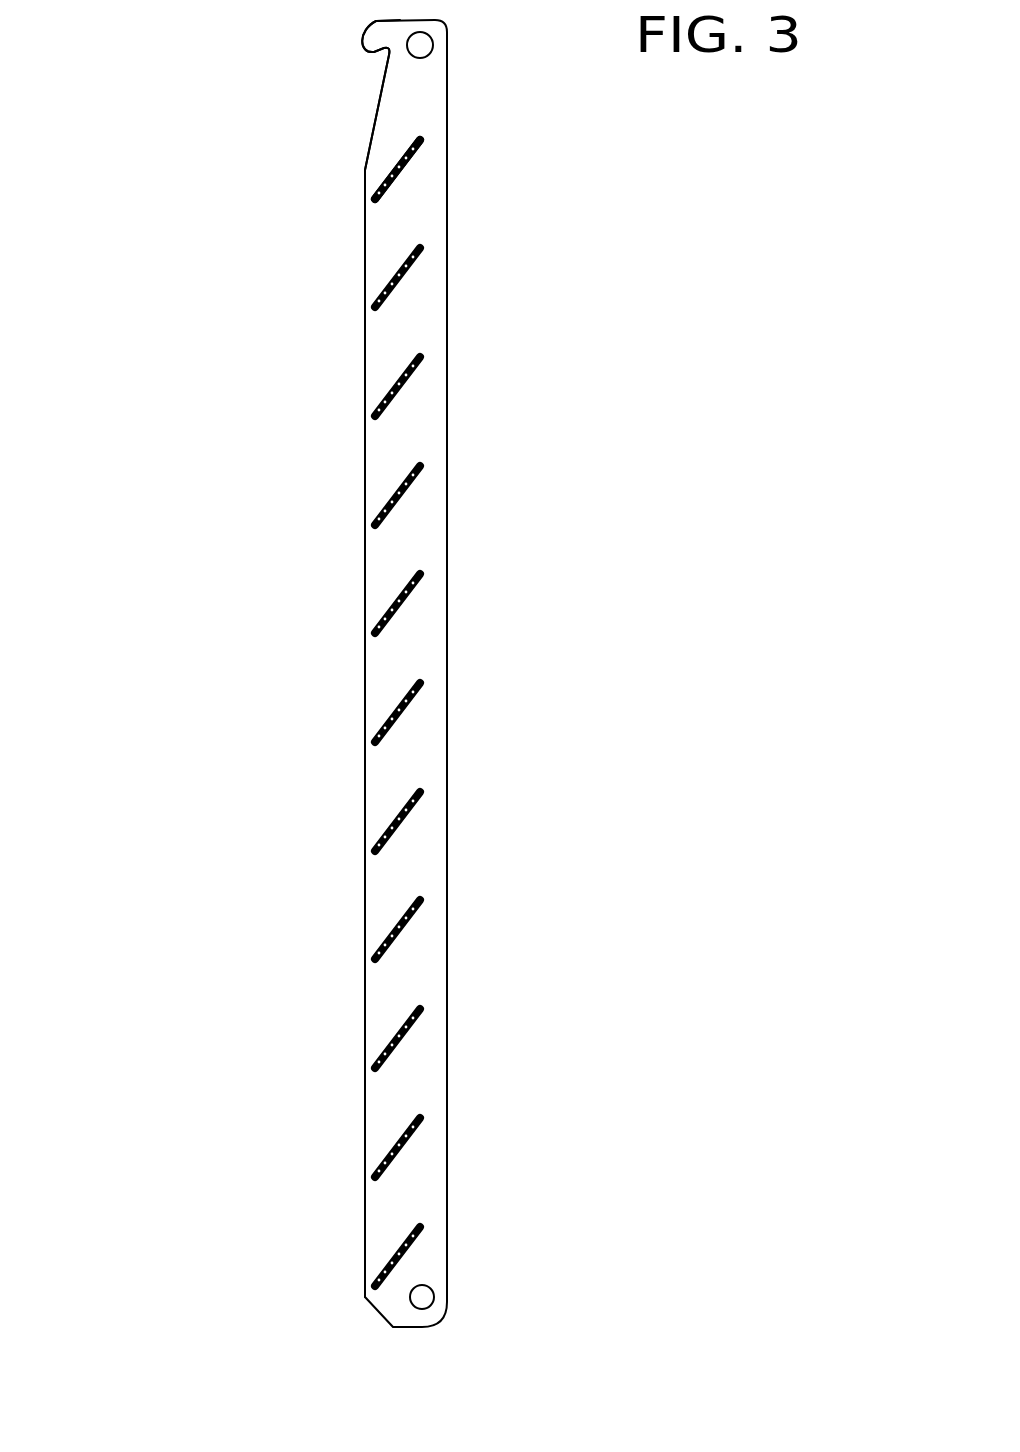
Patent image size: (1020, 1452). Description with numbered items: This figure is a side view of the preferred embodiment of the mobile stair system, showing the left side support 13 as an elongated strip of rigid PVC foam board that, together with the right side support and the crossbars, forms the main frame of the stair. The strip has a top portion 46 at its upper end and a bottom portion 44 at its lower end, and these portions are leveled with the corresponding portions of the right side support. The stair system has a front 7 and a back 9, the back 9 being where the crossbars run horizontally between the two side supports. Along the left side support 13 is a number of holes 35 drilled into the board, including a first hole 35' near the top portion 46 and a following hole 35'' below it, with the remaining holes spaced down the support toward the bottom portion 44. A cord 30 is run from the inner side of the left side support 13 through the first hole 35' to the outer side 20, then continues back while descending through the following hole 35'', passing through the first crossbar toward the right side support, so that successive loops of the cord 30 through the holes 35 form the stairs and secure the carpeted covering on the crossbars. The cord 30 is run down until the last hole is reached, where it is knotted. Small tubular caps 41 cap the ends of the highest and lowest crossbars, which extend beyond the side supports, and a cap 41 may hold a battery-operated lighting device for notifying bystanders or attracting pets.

The front 7 is at (447, 637).
The back 9 is at (365, 643).
The left side support 13 is at (393, 240).
The outer side 20 is at (365, 775).
The cord 30 is at (410, 484).
The number of holes 35 is at (586, 984).
The first hole 35' is at (596, 158).
The following hole 35'' is at (605, 178).
The tubular caps 41 is at (434, 1297).
The bottom portion 44 is at (365, 1200).
The top portion 46 is at (377, 118).